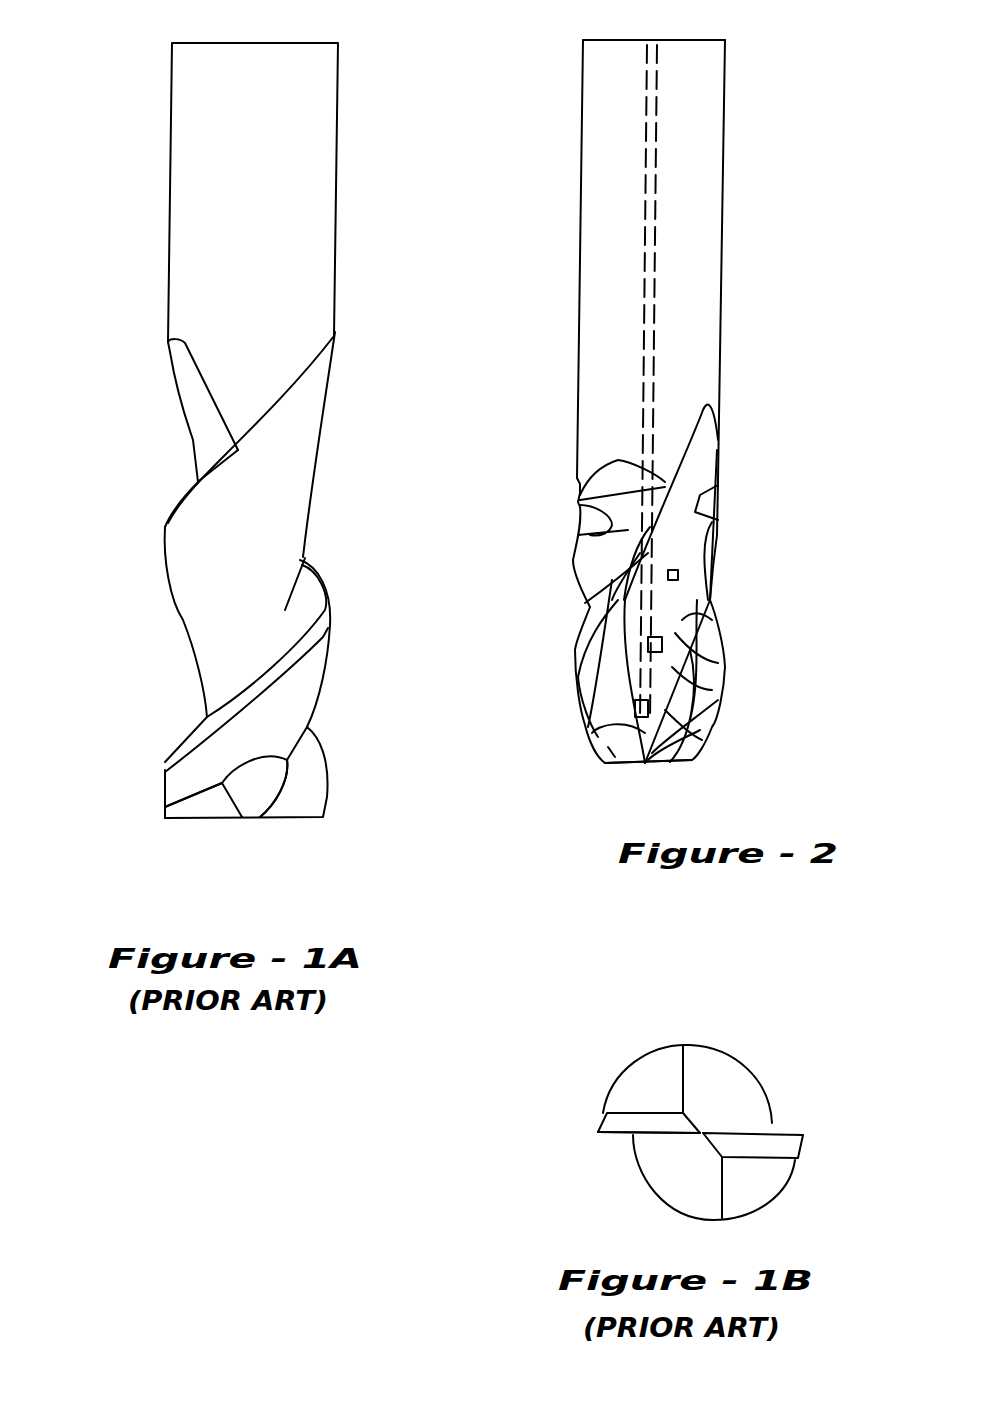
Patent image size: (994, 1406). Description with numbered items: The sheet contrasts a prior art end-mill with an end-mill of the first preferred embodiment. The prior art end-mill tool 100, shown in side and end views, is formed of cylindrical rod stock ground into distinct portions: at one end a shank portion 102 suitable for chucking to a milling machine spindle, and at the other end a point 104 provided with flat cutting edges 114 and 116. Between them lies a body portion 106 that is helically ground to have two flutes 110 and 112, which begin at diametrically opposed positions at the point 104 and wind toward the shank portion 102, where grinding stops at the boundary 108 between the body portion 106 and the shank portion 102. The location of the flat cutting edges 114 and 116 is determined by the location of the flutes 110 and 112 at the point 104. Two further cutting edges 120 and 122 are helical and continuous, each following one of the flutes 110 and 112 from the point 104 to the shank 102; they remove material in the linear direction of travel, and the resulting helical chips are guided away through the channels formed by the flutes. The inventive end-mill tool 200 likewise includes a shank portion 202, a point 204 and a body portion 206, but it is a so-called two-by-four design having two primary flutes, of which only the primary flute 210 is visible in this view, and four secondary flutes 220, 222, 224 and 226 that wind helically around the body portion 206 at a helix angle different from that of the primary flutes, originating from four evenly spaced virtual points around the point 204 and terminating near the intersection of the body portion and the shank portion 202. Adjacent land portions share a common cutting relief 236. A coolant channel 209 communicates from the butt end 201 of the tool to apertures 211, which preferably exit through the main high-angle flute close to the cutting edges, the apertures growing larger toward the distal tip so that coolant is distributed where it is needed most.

In FIG. 1A, the end-mill tool 100 is at (372, 174).
In FIG. 1B, the end-mill tool 100 is at (573, 1086).
In FIG. 1A, the shank portion 102 is at (283, 166).
In FIG. 1A, the point 104 is at (217, 826).
In FIG. 1A, the body portion 106 is at (262, 561).
In FIG. 1A, the boundary 108 is at (272, 375).
In FIG. 1A, the flute 110 is at (160, 435).
In FIG. 1A, the flute 112 is at (157, 647).
In FIG. 1A, the cutting edge 114 is at (175, 822).
In FIG. 1B, the cutting edge 114 is at (607, 1133).
In FIG. 1A, the cutting edge 116 is at (294, 822).
In FIG. 1B, the cutting edge 116 is at (785, 1128).
In FIG. 1A, the cutting edge 120 is at (173, 740).
In FIG. 1A, the cutting edge 122 is at (174, 491).
In FIG. 2, the end-mill tool 200 is at (784, 165).
In FIG. 2, the butt end 201 is at (697, 40).
In FIG. 2, the shank portion 202 is at (690, 293).
In FIG. 2, the point 204 is at (643, 765).
In FIG. 2, the body portion 206 is at (709, 406).
In FIG. 2, the coolant channel 209 is at (647, 213).
In FIG. 2, the primary flute 210 is at (692, 464).
In FIG. 2, the aperture 211 is at (668, 574).
In FIG. 2, the secondary flute 220 is at (706, 683).
In FIG. 2, the secondary flute 222 is at (712, 618).
In FIG. 2, the secondary flute 224 is at (712, 563).
In FIG. 2, the secondary flute 226 is at (714, 497).
In FIG. 2, the cutting relief 236 is at (718, 523).